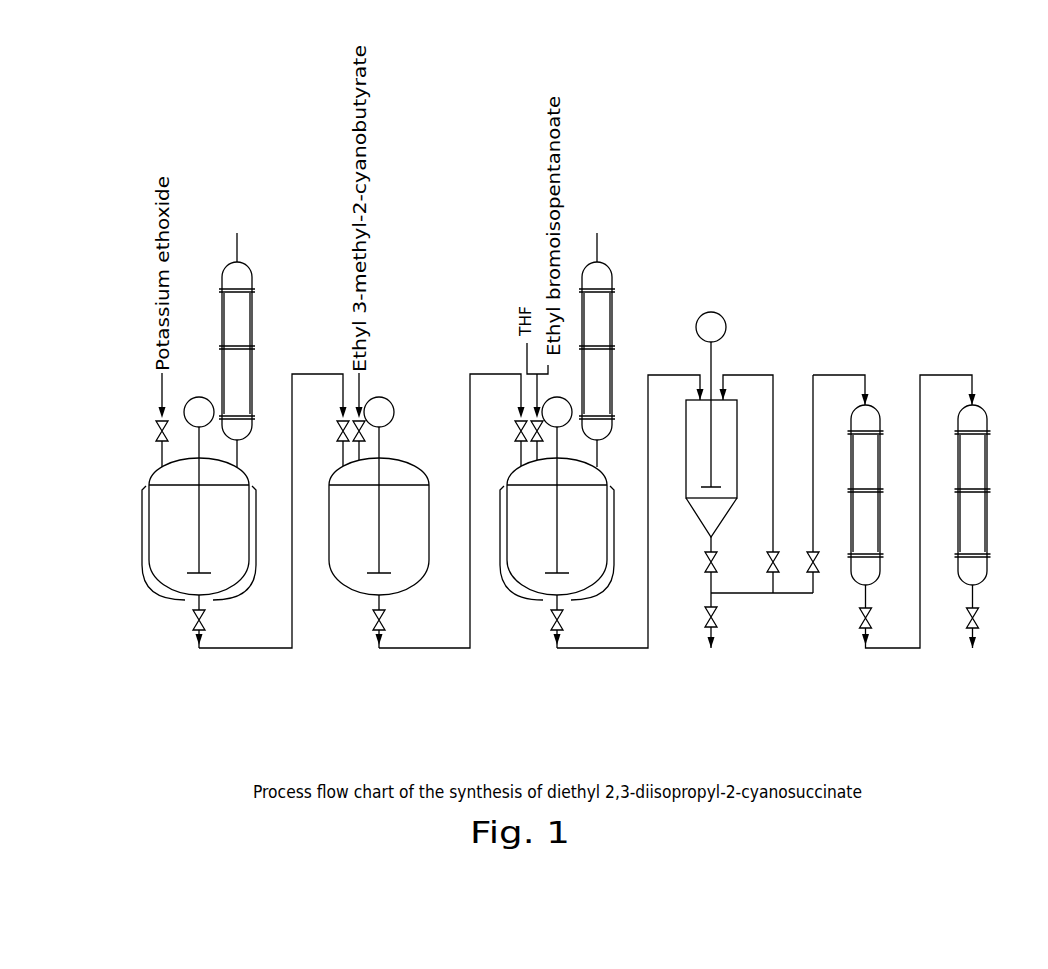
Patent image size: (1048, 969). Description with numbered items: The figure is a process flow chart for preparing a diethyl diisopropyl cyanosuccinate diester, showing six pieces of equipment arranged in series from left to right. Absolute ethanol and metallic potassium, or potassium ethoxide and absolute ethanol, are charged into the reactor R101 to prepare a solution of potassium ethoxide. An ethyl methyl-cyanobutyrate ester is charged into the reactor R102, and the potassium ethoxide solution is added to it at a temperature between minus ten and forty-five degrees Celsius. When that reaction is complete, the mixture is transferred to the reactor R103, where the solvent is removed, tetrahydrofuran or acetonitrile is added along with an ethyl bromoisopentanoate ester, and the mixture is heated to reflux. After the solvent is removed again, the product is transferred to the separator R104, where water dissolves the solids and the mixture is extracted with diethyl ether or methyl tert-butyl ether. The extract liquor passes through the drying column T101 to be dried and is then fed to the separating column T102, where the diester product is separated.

The reactor R101 is at (228, 700).
The reactor R102 is at (410, 700).
The reactor R103 is at (588, 700).
The separator R104 is at (738, 700).
The drying column T101 is at (889, 700).
The separating column T102 is at (1000, 700).